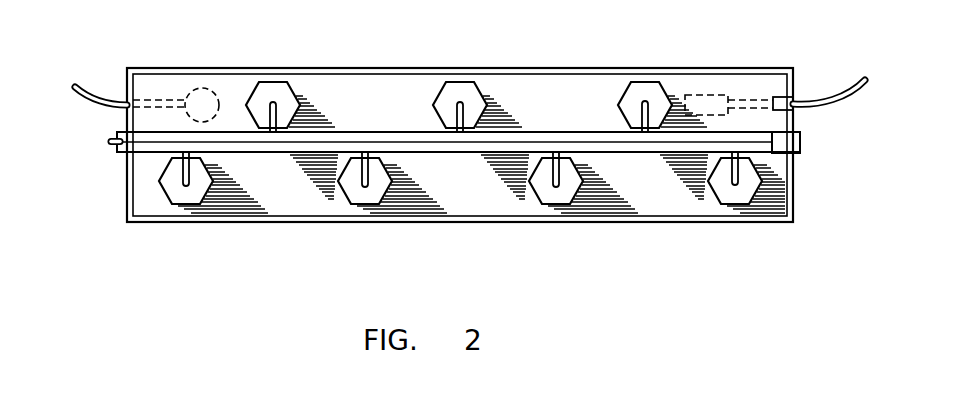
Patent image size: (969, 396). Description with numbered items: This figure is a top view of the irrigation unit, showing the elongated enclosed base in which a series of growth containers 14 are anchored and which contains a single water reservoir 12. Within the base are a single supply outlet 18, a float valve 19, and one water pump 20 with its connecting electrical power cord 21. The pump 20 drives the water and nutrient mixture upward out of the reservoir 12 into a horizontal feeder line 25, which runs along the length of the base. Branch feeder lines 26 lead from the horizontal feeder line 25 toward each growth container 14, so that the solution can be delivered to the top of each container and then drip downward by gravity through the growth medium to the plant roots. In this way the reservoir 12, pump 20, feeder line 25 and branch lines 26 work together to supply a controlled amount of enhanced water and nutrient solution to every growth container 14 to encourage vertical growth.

The water reservoir 12 is at (545, 68).
The growth containers 14 is at (452, 93).
The supply outlet 18 is at (791, 100).
The float valve 19 is at (705, 97).
The water pump 20 is at (190, 95).
The electrical power cord 21 is at (93, 108).
The horizontal feeder line 25 is at (255, 148).
The branch feeder lines 26 is at (570, 183).